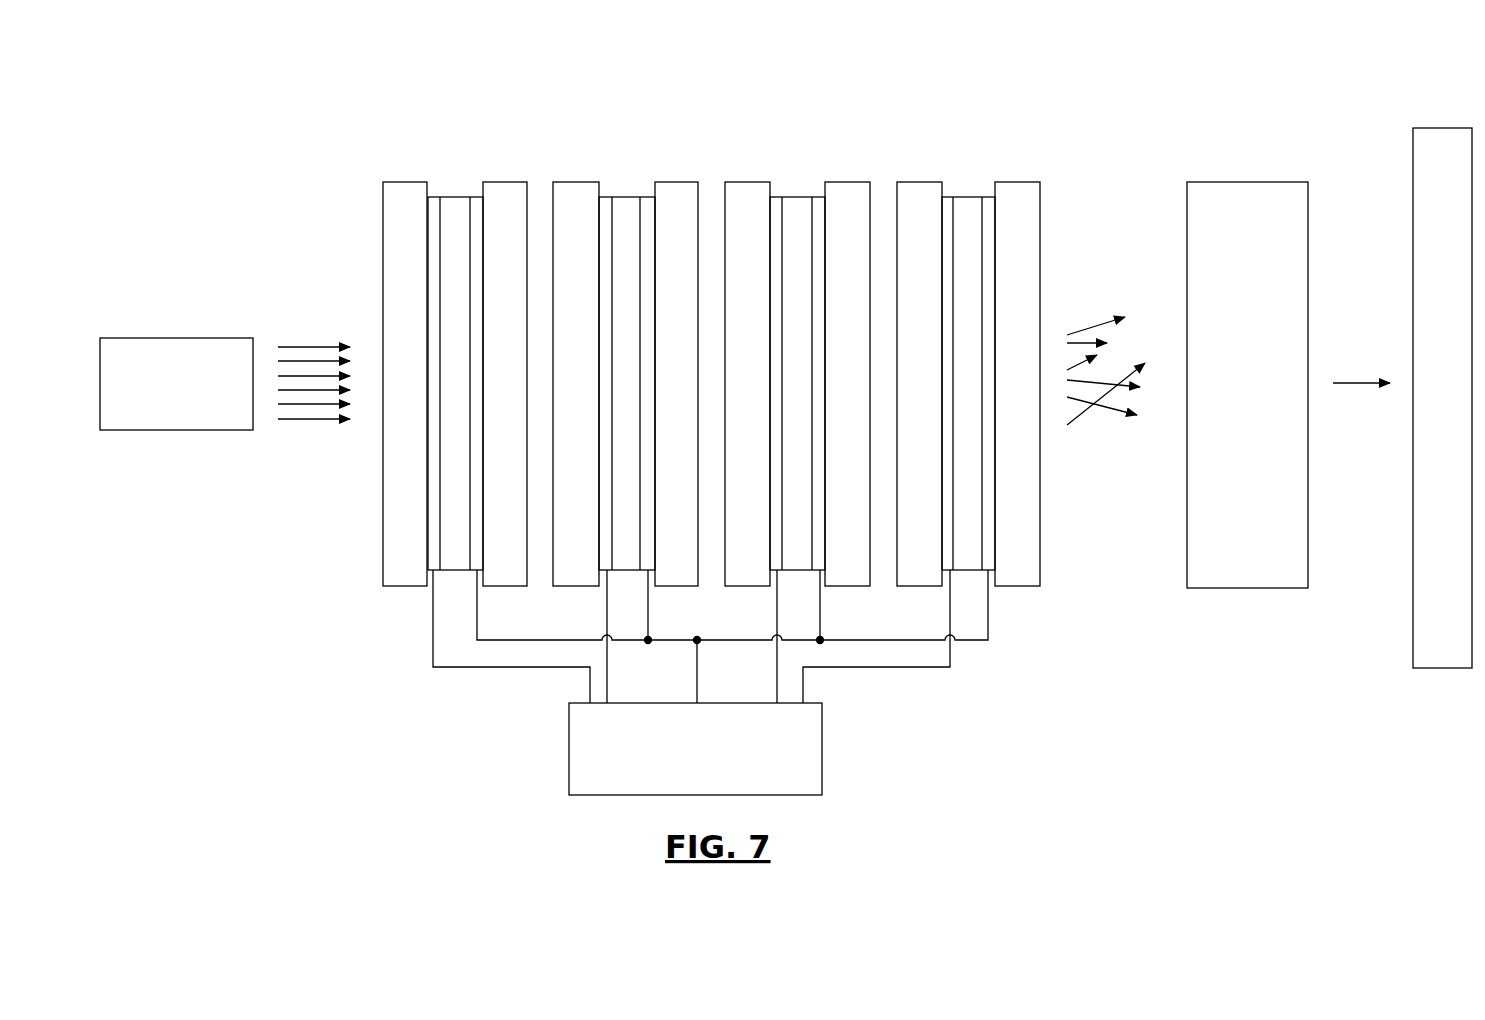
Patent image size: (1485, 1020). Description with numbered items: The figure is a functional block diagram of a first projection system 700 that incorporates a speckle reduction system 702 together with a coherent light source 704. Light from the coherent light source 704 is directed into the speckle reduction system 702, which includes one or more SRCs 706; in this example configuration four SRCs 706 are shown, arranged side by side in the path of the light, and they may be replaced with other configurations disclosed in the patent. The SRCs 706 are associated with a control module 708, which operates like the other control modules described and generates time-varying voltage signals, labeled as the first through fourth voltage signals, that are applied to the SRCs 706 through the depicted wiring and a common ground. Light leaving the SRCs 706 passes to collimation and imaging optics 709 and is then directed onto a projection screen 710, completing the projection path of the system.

The first projection system 700 is at (285, 66).
The speckle reduction system 702 is at (210, 654).
The coherent light source 704 is at (192, 338).
The SRCs 706 is at (383, 182).
The control module 708 is at (569, 729).
The collimation and imaging optics 709 is at (1252, 182).
The projection screen 710 is at (1413, 162).